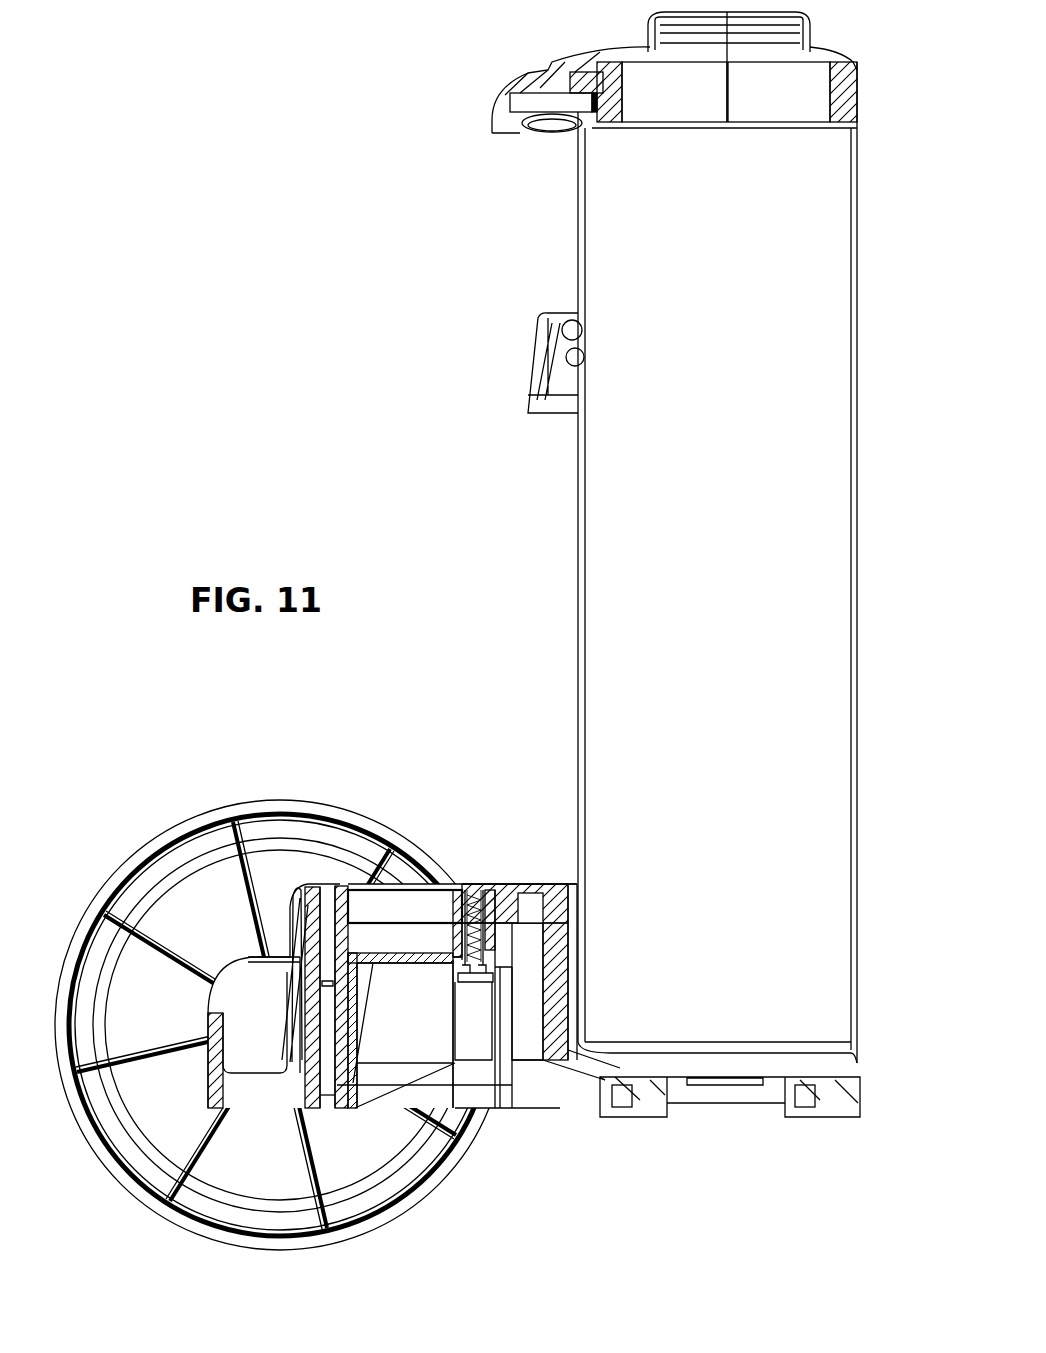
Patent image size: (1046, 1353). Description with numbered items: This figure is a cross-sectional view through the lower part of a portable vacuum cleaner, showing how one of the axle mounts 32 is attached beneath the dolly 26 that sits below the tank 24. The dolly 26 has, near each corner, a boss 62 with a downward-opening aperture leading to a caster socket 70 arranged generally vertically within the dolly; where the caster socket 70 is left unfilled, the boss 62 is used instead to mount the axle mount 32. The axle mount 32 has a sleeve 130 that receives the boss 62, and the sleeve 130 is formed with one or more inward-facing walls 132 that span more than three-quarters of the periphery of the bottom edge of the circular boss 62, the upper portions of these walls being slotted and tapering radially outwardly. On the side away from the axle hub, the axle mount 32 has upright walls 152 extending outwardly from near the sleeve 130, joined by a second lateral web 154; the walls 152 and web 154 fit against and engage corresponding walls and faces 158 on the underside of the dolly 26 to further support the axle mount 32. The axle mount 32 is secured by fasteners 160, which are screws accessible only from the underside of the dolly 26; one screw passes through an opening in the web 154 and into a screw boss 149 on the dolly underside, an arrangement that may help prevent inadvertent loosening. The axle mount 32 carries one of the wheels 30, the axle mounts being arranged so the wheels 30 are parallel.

The tank 24 is at (577, 482).
The dolly 26 is at (555, 888).
The wheels 30 is at (90, 972).
The axle mounts 32 is at (407, 997).
The boss 62 is at (348, 893).
The caster socket 70 is at (323, 1003).
The sleeve 130 is at (337, 1100).
The inward-facing walls 132 is at (313, 1097).
The screw bosses 149 is at (473, 973).
The upright walls 152 is at (505, 1093).
The second lateral web 154 is at (438, 960).
The walls and faces 158 is at (515, 1033).
The fasteners 160 is at (478, 920).